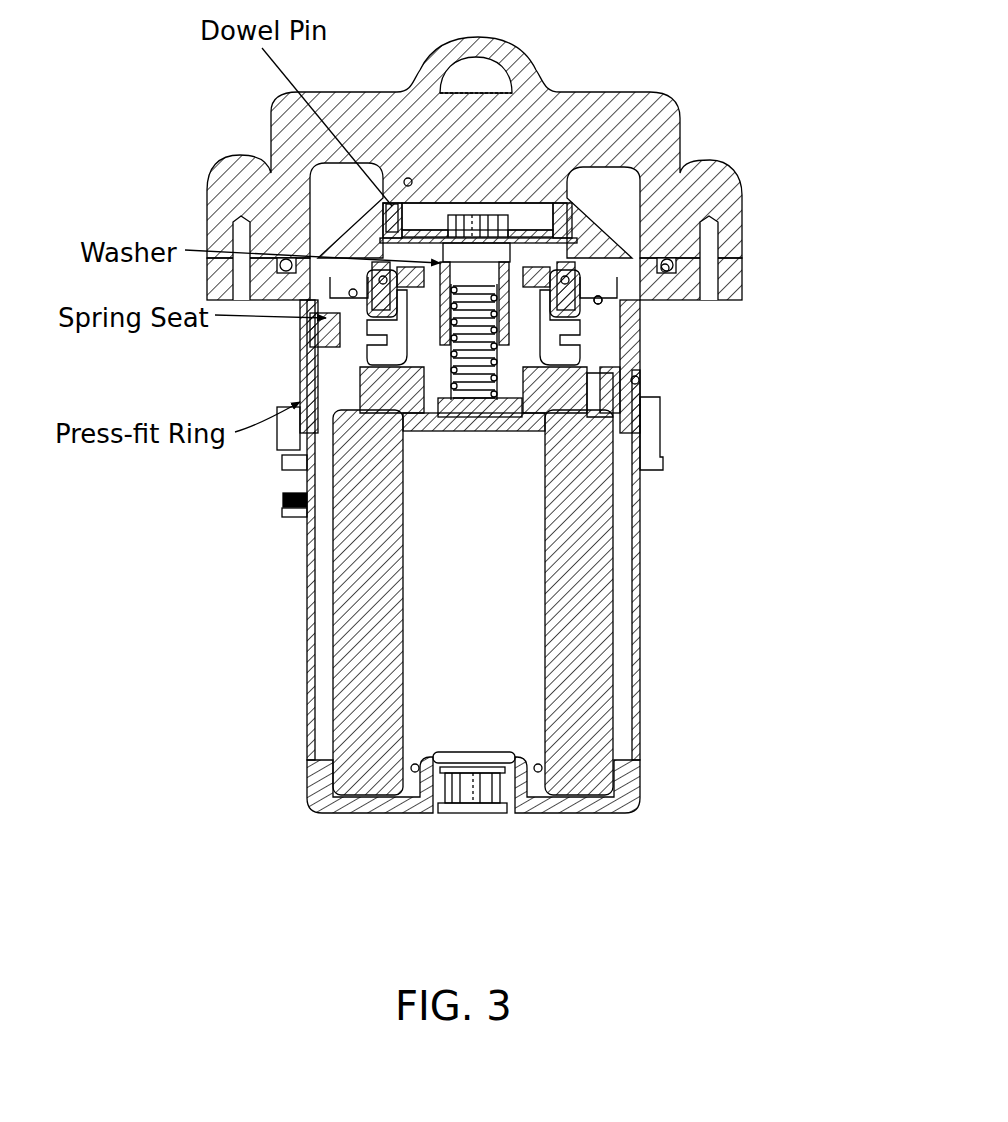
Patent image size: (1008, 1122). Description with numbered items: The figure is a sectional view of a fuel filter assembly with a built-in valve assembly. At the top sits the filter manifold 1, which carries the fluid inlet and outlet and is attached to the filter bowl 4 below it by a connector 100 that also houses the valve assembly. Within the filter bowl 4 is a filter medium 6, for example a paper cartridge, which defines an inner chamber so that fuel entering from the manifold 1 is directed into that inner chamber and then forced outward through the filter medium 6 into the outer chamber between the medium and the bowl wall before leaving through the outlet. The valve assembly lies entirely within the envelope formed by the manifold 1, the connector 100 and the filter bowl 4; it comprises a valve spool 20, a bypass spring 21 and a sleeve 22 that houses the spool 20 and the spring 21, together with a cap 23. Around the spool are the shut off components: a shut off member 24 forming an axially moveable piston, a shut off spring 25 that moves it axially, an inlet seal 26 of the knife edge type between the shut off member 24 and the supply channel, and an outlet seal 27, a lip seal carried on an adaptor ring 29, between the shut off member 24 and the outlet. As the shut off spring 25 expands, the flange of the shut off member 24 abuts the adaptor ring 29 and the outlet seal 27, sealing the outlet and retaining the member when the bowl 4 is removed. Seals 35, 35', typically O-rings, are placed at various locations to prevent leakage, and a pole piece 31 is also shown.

The filter manifold 1 is at (652, 221).
The connector 100 is at (732, 287).
The sleeve 22 is at (386, 198).
The valve spool 20 is at (443, 252).
The cap 23 is at (493, 420).
The pole piece 31 is at (432, 412).
The outlet shut off seal 27 is at (312, 336).
The adaptor ring 29 is at (312, 364).
The shut off member 24 is at (662, 418).
The bypass spring 21 is at (665, 450).
The shut off spring 25 is at (288, 455).
The inlet shut off seal 26 is at (290, 498).
The filter bowl 4 is at (634, 726).
The filter medium 6 is at (606, 638).
The seal 35 is at (594, 297).
The seal 35' is at (578, 785).